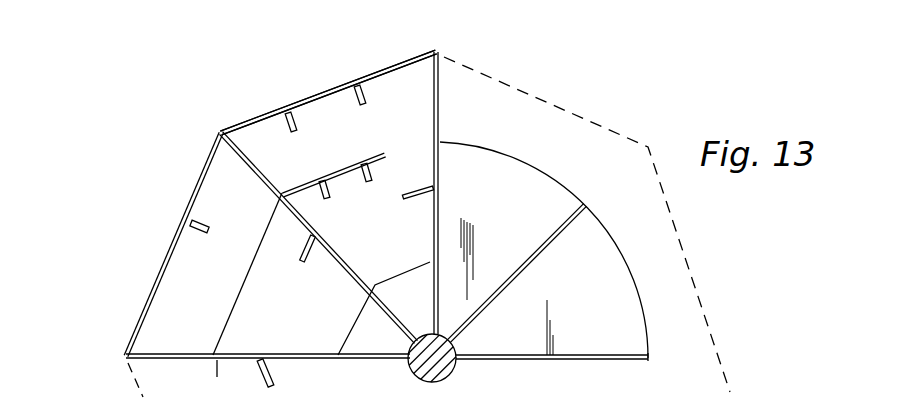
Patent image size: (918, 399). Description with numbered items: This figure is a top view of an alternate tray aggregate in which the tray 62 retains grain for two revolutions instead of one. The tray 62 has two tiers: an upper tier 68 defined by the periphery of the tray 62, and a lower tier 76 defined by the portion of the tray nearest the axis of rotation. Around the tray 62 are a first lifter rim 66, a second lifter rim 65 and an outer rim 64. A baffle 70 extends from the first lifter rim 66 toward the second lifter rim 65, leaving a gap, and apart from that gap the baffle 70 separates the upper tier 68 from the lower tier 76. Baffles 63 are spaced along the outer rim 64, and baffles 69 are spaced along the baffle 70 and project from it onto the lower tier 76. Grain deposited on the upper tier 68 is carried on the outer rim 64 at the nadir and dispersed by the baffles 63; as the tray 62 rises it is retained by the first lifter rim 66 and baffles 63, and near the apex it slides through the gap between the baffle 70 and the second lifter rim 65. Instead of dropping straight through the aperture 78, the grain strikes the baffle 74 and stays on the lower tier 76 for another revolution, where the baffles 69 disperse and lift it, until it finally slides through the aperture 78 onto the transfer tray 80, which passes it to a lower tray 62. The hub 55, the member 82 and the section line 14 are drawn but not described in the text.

The section line 14- 14 is at (82, 352).
The pivot hub 55 is at (441, 368).
The tray 62 is at (253, 120).
The baffles 63 is at (367, 98).
The outer rim 64 is at (322, 95).
The second lifter rim 65 is at (439, 83).
The first lifter rim 66 is at (243, 160).
The upper tier 68 is at (323, 143).
The baffles 69 is at (331, 192).
The baffle 70 is at (331, 177).
The baffle 74 is at (414, 200).
The lower tier 76 is at (375, 248).
The aperture 78 is at (410, 297).
The transfer tray 80 is at (543, 171).
The radial rail 82 is at (543, 250).